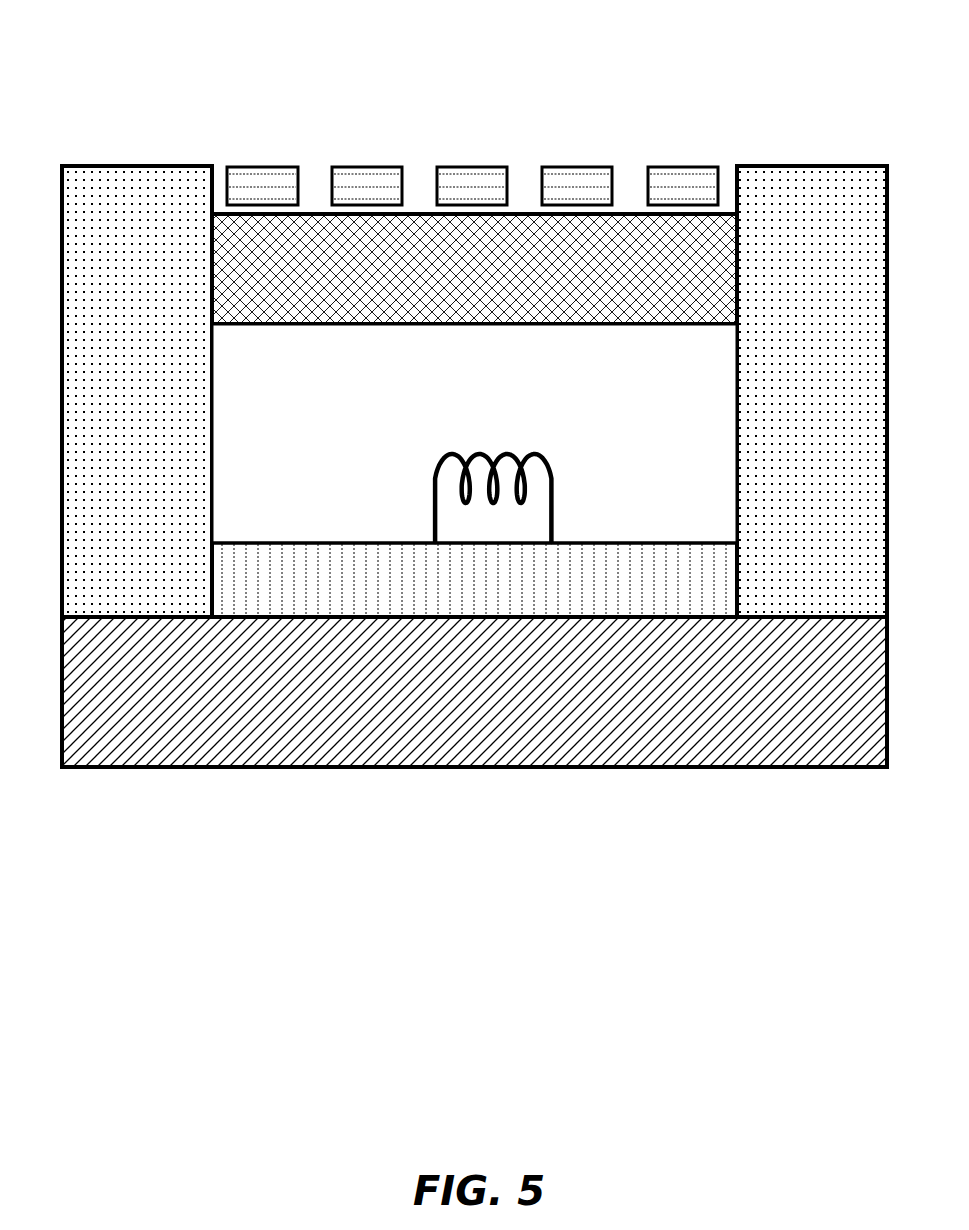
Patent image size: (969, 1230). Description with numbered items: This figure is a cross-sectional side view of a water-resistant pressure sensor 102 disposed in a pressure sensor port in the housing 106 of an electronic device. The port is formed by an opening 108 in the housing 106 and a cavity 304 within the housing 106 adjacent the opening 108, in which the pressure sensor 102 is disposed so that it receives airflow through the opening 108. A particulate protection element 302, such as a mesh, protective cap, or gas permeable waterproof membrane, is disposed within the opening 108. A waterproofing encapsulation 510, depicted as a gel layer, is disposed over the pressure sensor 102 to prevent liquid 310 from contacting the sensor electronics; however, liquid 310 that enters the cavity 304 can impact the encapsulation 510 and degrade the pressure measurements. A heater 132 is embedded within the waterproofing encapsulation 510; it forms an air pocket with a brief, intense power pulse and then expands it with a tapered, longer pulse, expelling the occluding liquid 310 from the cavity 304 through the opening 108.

The opening 108 is at (474, 391).
The housing 106 is at (155, 170).
The particulate protection element 302 is at (568, 167).
The liquid 310 is at (512, 280).
The cavity 304 is at (313, 384).
The heater 132 is at (552, 458).
The waterproofing encapsulation 510 is at (625, 543).
The pressure sensor 102 is at (510, 688).